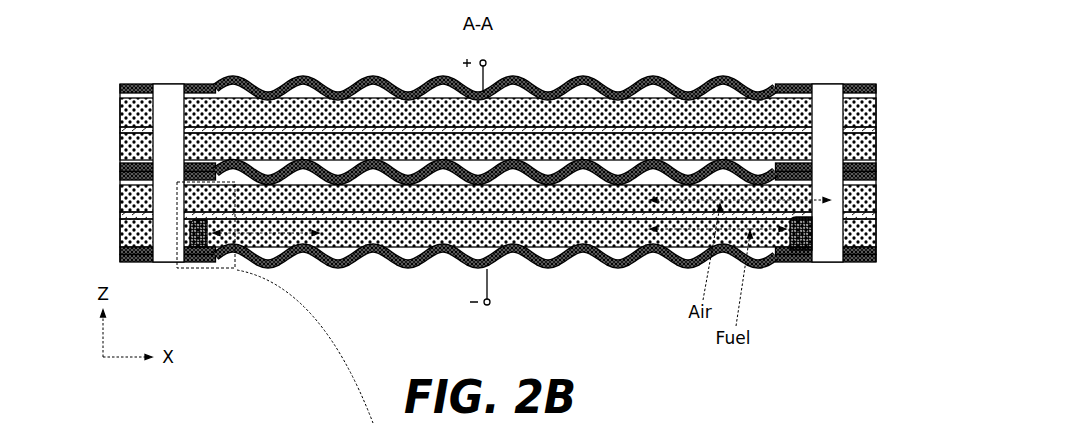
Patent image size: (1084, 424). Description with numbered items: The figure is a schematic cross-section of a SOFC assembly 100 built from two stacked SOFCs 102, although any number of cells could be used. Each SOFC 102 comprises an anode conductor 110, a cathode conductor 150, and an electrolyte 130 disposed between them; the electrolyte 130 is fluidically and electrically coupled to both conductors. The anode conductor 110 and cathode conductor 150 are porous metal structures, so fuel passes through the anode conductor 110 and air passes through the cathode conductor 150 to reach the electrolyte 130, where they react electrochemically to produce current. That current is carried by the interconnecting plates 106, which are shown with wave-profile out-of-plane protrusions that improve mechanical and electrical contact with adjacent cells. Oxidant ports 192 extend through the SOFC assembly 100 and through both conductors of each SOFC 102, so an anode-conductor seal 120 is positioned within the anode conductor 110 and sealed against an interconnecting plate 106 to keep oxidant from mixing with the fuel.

The SOFC assembly 100 is at (857, 73).
The SOFC 102 is at (470, 228).
The interconnecting plate 106 is at (877, 167).
The anode conductor 110 is at (502, 240).
The anode-conductor seal 120 is at (208, 264).
The electrolyte 130 is at (621, 213).
The cathode conductor 150 is at (554, 214).
The oxidant port 192 is at (163, 113).